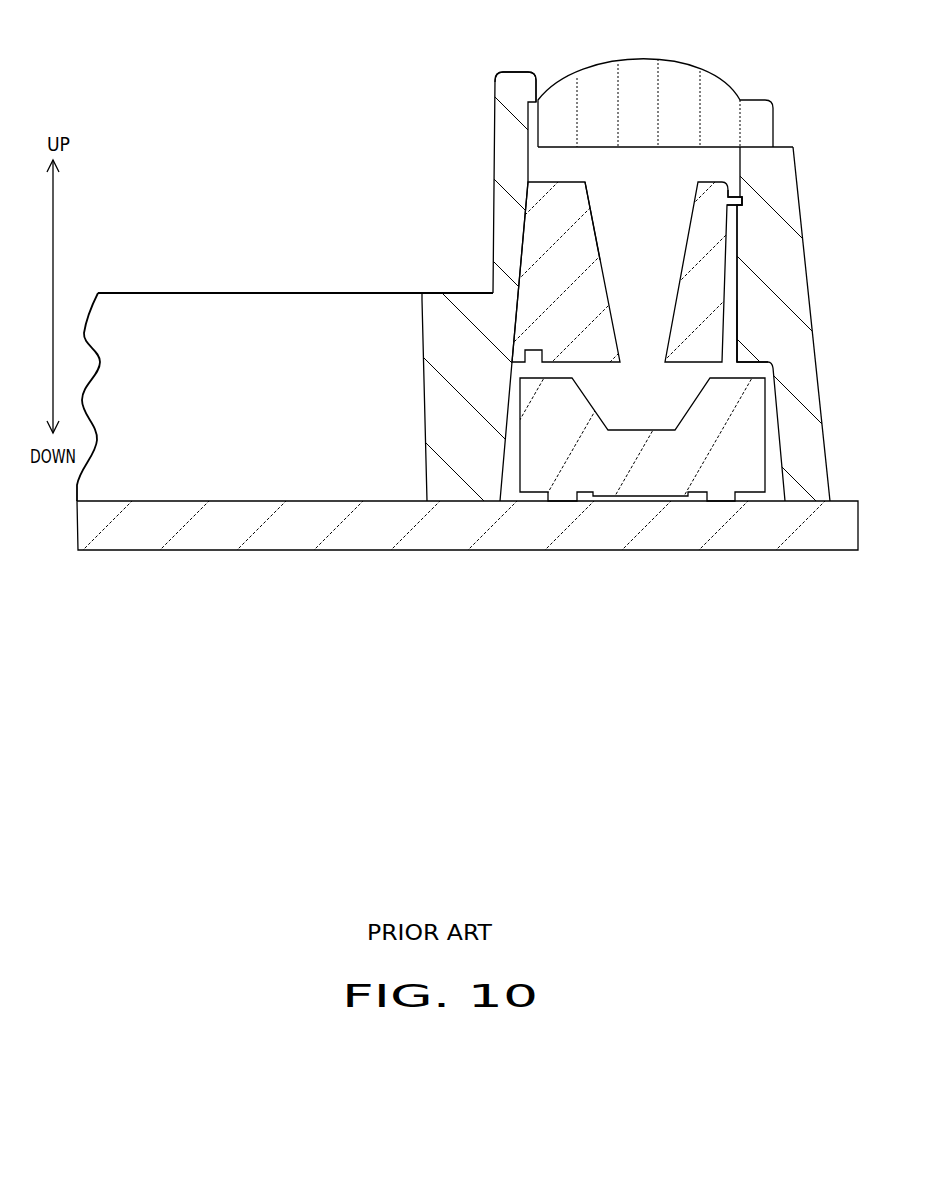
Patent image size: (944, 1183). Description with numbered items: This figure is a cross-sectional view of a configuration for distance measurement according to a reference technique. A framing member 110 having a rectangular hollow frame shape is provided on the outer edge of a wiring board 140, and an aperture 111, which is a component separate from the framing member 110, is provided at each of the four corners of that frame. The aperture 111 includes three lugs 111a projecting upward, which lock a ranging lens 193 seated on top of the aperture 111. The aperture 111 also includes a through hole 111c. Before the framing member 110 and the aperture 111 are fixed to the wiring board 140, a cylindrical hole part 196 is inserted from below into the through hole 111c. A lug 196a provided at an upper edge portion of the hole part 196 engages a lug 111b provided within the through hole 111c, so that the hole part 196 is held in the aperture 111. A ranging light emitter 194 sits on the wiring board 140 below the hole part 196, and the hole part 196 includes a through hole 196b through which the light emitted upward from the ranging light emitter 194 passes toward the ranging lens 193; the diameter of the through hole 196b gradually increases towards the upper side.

The framing member 110 is at (258, 292).
The aperture 111 is at (597, 480).
The lug 111a is at (562, 62).
The lug 111b is at (726, 233).
The through hole 111c is at (740, 330).
The ranging lens 193 is at (715, 103).
The ranging light emitter 194 is at (658, 450).
The hole part 196 is at (651, 286).
The lug 196a is at (799, 202).
The through hole 196b is at (600, 221).
The wiring board 140 is at (459, 558).